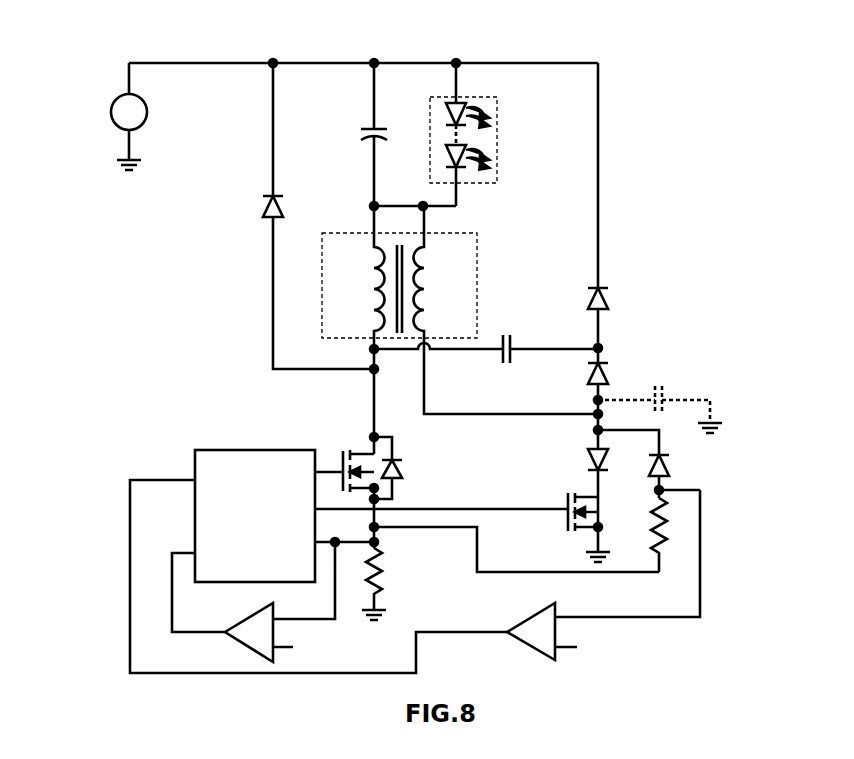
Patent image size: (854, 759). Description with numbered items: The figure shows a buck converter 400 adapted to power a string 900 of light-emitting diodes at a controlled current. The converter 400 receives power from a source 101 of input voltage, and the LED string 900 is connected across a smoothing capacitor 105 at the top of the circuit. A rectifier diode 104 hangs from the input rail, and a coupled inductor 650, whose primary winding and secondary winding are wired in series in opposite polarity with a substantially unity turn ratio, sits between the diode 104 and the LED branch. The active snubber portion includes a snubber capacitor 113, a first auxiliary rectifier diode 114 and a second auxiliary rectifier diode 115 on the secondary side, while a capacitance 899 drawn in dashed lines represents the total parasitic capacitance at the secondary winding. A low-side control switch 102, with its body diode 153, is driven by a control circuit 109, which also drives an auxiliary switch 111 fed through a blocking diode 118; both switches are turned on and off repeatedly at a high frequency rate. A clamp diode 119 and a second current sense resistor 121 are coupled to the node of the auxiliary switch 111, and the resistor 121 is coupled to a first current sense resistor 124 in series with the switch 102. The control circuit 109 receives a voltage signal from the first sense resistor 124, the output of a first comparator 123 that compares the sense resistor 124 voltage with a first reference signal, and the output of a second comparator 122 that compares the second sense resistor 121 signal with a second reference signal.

The buck converter 400 is at (201, 53).
The source 101 is at (157, 113).
The rectifier diode 104 is at (262, 205).
The smoothing capacitor 105 is at (362, 134).
The string of light-emitting diodes 900 is at (497, 140).
The coupled inductor 650 is at (355, 228).
The snubber capacitor 113 is at (500, 357).
The second auxiliary rectifier diode 115 is at (585, 307).
The first auxiliary rectifier diode 114 is at (585, 371).
The capacitance 899 is at (652, 393).
The blocking diode 118 is at (588, 457).
The auxiliary switch 111 is at (562, 497).
The clamp diode 119 is at (677, 460).
The second current sense resistor 121 is at (650, 508).
The control circuit 109 is at (255, 443).
The control switch 102 is at (348, 445).
The body diode 153 is at (400, 462).
The first current sense resistor 124 is at (390, 567).
The first comparator 123 is at (237, 620).
The second comparator 122 is at (510, 625).